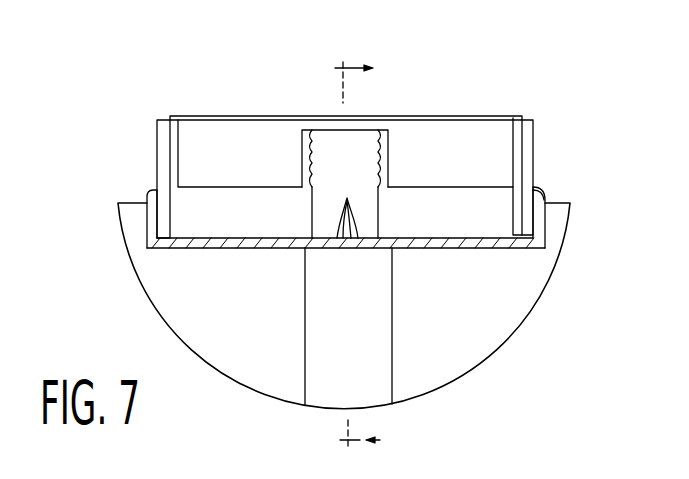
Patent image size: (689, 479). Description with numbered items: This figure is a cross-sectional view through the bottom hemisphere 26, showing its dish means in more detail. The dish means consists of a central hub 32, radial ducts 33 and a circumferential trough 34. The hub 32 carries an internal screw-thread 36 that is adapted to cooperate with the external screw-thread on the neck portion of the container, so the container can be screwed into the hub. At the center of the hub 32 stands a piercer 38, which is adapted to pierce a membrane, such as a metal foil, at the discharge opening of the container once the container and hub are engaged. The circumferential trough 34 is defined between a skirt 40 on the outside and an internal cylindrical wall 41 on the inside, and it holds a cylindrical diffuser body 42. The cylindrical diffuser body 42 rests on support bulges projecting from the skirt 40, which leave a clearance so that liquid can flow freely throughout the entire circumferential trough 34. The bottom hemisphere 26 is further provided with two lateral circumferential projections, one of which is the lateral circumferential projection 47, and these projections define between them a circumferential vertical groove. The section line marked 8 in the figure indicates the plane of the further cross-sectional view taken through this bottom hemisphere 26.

The section line 8- 8 is at (351, 256).
The bottom hemisphere 26 is at (131, 283).
The central hub 32 is at (362, 133).
The radial ducts 33 is at (457, 220).
The circumferential trough 34 is at (538, 207).
The internal screw-thread 36 is at (313, 158).
The piercer 38 is at (335, 250).
The skirt 40 is at (538, 188).
The internal cylindrical wall 41 is at (447, 125).
The cylindrical diffuser body 42 is at (525, 135).
The lateral circumferential projection 47 is at (518, 295).